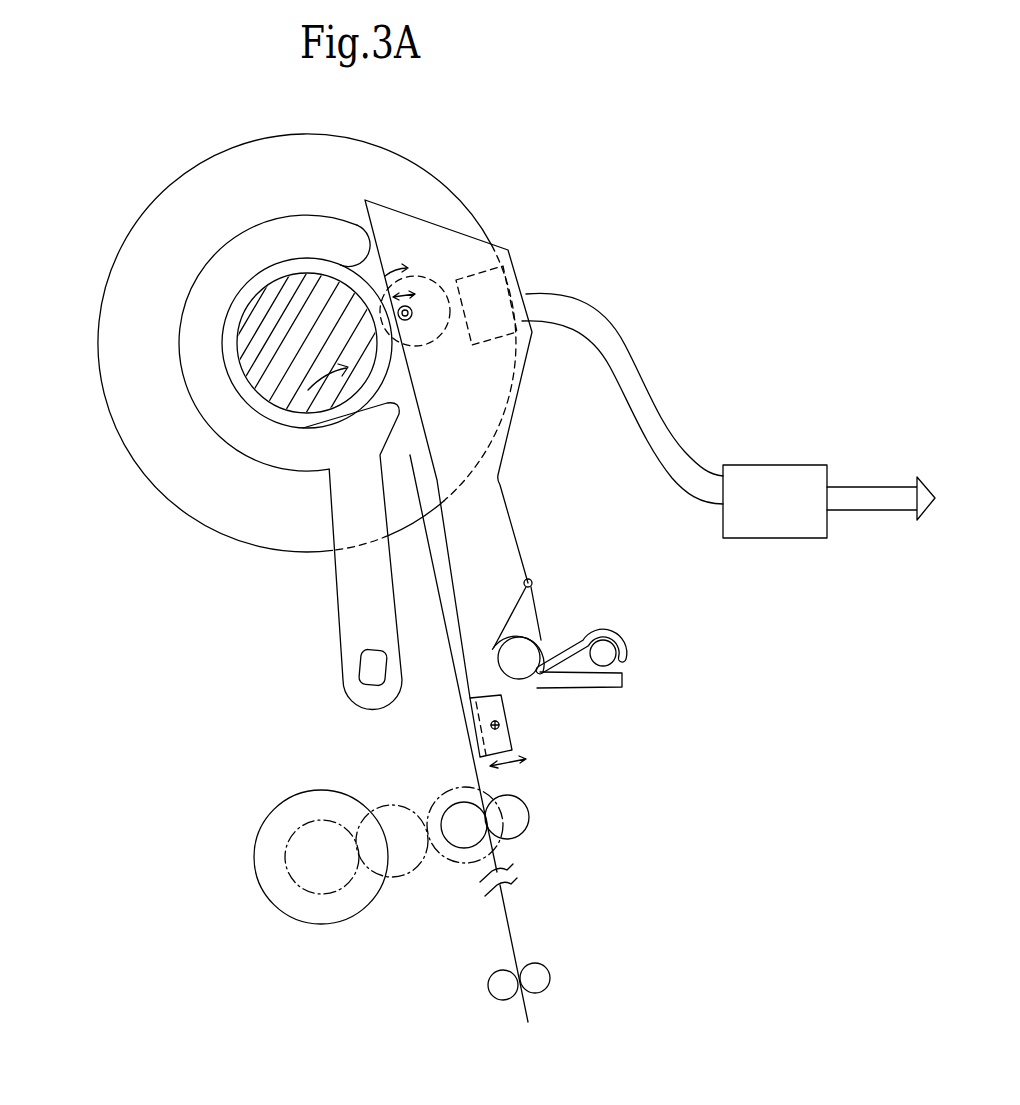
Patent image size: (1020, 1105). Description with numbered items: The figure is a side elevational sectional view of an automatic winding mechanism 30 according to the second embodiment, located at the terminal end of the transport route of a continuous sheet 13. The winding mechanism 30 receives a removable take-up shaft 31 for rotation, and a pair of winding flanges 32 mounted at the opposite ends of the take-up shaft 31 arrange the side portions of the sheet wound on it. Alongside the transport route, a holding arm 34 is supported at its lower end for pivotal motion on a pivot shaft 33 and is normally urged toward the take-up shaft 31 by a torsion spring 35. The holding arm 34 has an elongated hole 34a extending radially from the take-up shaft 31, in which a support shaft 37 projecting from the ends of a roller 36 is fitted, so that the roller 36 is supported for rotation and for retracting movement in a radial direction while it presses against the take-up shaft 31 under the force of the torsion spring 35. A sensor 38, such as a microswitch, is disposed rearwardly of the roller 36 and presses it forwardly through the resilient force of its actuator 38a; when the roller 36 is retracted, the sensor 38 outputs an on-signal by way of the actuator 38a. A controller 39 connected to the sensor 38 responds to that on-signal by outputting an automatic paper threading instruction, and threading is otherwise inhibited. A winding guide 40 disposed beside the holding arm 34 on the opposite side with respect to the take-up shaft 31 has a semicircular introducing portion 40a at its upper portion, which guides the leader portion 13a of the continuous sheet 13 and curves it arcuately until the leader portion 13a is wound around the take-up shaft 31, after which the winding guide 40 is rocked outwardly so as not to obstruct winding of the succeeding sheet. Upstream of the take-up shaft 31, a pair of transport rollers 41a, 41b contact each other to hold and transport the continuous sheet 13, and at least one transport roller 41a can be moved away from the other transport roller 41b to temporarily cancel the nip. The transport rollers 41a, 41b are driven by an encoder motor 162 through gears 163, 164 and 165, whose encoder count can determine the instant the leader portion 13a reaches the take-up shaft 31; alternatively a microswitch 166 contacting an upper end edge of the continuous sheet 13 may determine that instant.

The continuous sheet 13 is at (507, 914).
The leader portion 13a is at (418, 492).
The winding mechanism 30 is at (537, 194).
The take-up shaft 31 is at (247, 372).
The winding flange 32 is at (430, 168).
The pivot shaft 33 is at (522, 654).
The holding arm 34 is at (503, 445).
The elongated hole 34a is at (405, 321).
The torsion spring 35 is at (532, 590).
The roller 36 is at (426, 277).
The support shaft 37 is at (408, 308).
The sensor 38 is at (510, 281).
The actuator 38a is at (504, 266).
The controller 39 is at (795, 465).
The winding guide 40 is at (342, 505).
The introducing portion 40a is at (196, 290).
The transport roller 41a is at (527, 820).
The transport roller 41b is at (495, 847).
The encoder motor 162 is at (292, 918).
The gear 163 is at (283, 873).
The gear 164 is at (410, 877).
The gear 165 is at (448, 858).
The microswitch 166 is at (512, 742).